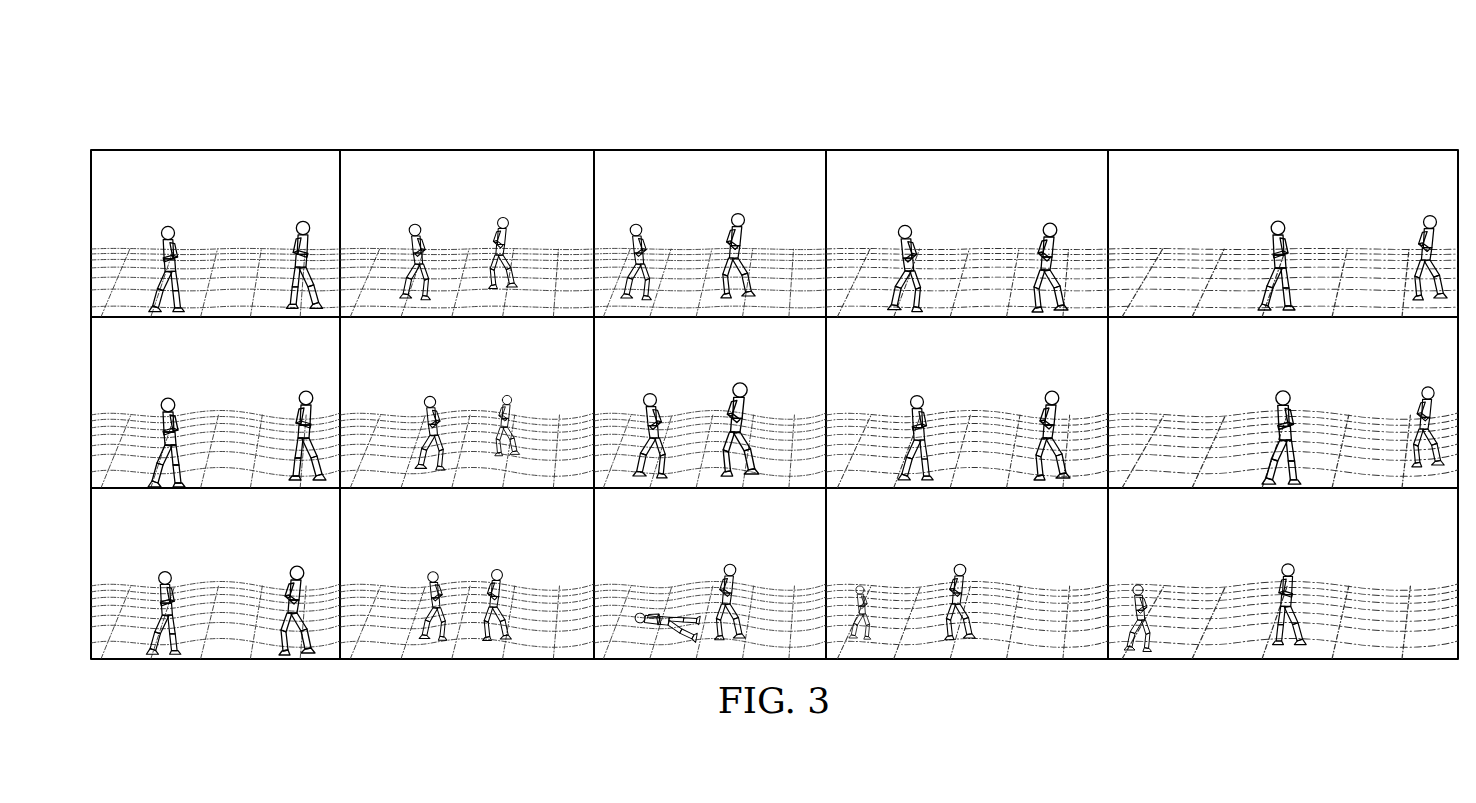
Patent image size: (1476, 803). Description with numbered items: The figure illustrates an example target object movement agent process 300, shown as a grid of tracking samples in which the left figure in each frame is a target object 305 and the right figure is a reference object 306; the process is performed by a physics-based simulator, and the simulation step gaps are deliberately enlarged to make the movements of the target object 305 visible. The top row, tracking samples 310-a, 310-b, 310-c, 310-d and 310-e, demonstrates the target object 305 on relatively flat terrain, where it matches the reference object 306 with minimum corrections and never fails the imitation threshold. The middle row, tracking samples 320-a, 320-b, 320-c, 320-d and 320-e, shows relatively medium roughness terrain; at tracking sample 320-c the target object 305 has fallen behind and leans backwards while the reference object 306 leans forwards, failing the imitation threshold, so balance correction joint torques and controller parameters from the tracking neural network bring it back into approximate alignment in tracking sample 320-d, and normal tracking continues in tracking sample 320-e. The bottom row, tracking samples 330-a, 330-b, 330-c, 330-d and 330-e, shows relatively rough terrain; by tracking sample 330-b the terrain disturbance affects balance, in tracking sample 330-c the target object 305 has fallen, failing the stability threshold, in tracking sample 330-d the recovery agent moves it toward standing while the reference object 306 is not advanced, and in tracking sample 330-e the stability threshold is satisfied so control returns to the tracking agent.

The target object movement agent process 300 is at (508, 86).
The target object 305 is at (167, 226).
The reference object 306 is at (300, 220).
The tracking sample 310-a is at (195, 241).
The tracking sample 310-b is at (436, 198).
The tracking sample 310-c is at (679, 198).
The tracking sample 310-d is at (936, 198).
The tracking sample 310-e is at (1252, 198).
The tracking sample 320-a is at (185, 367).
The tracking sample 320-b is at (436, 367).
The tracking sample 320-c is at (679, 367).
The tracking sample 320-d is at (936, 367).
The tracking sample 320-e is at (1252, 367).
The tracking sample 330-a is at (185, 541).
The tracking sample 330-b is at (436, 541).
The tracking sample 330-c is at (679, 541).
The tracking sample 330-d is at (936, 541).
The tracking sample 330-e is at (1252, 541).